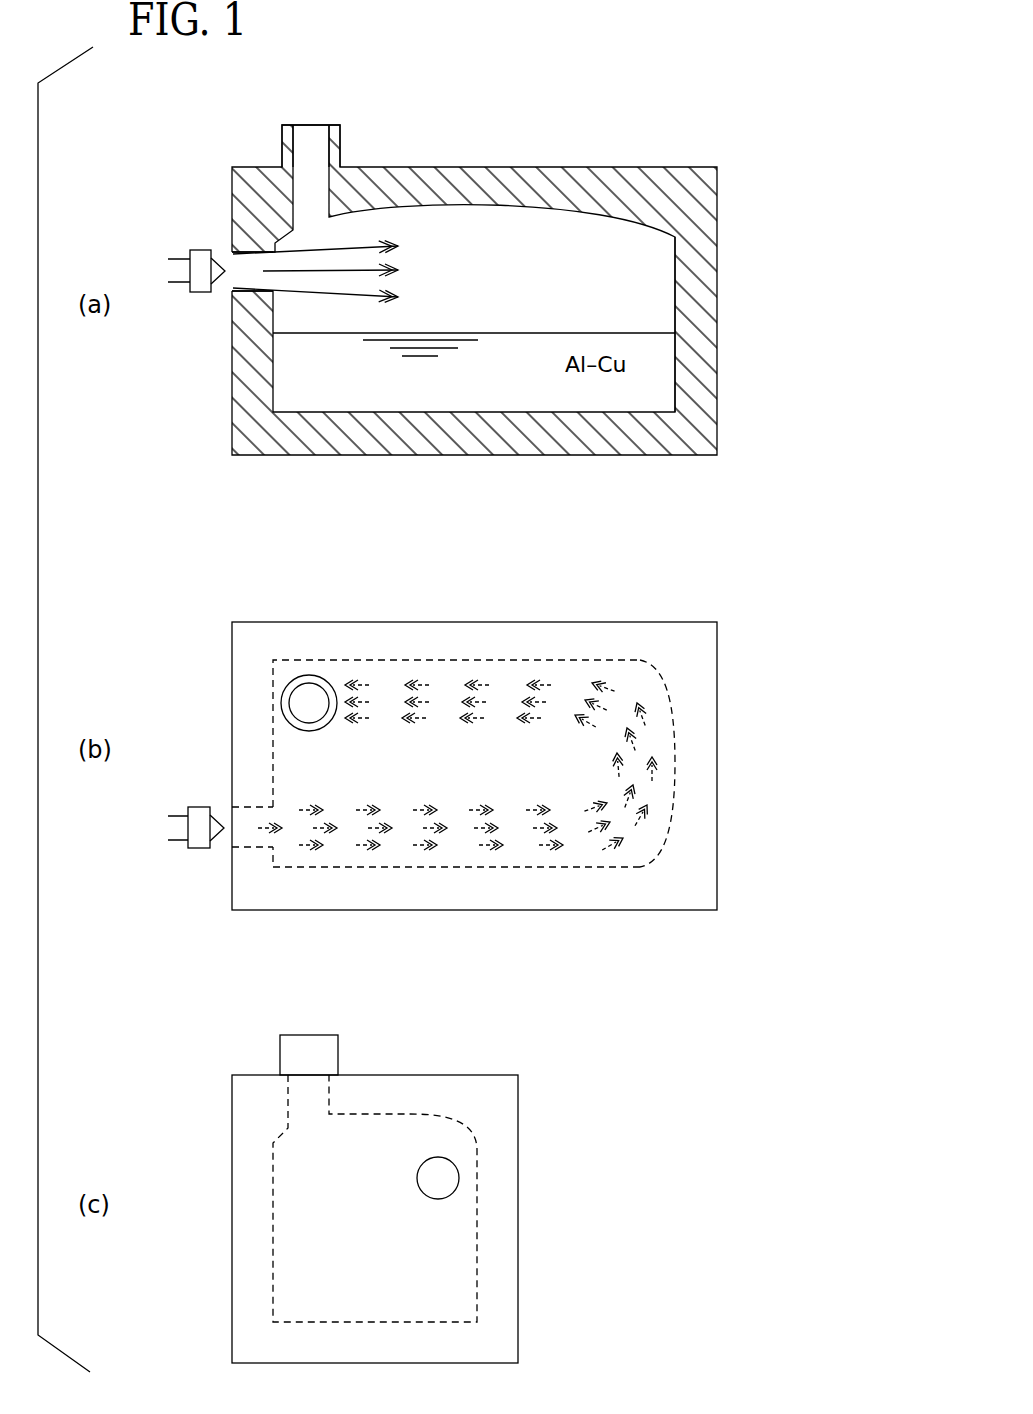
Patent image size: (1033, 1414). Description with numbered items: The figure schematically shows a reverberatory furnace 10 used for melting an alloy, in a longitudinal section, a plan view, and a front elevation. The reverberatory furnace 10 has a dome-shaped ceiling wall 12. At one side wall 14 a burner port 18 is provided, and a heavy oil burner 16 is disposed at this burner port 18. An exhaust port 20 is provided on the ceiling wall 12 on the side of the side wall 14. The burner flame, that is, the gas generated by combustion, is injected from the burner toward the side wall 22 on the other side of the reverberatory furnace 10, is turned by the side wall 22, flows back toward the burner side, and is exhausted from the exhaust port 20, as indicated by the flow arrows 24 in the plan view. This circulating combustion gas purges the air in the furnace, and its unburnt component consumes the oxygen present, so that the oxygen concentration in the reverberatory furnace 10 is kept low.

The reverberatory furnace 10 is at (670, 138).
The ceiling wall 12 is at (500, 187).
The side wall 14 is at (250, 368).
The heavy oil burner 16 is at (203, 258).
The burner port 18 is at (248, 270).
The exhaust port 20 is at (310, 145).
The side wall 22 is at (708, 318).
The gas flow 24 is at (368, 292).